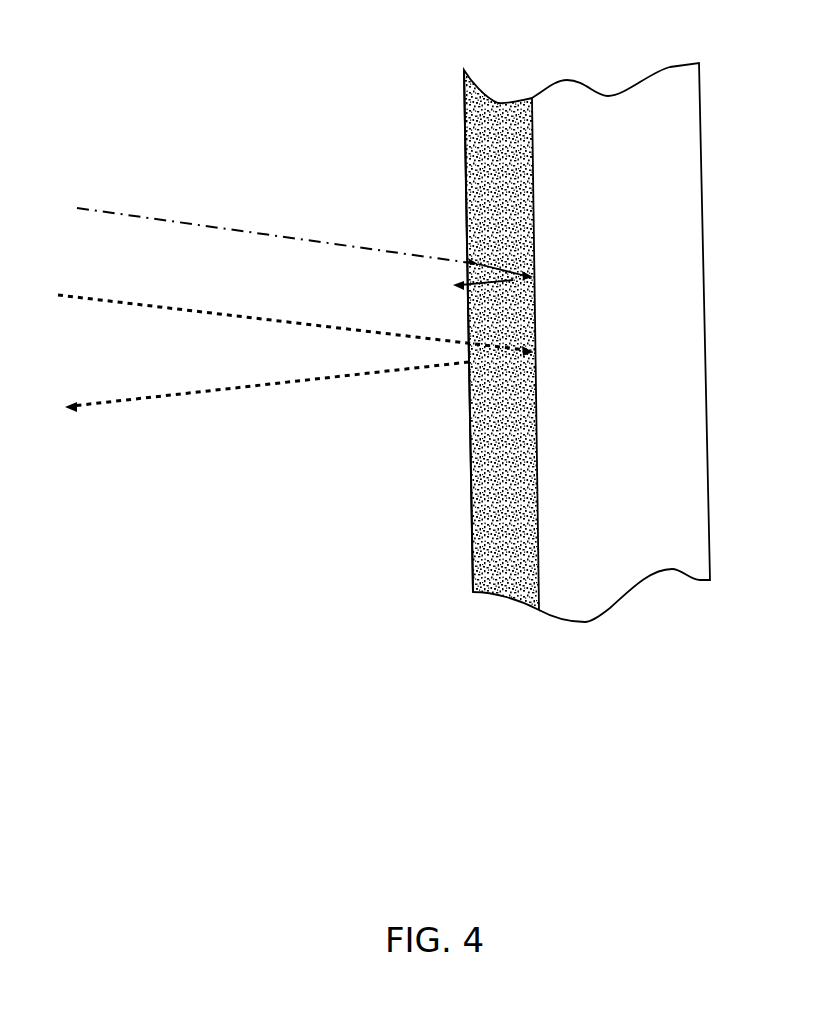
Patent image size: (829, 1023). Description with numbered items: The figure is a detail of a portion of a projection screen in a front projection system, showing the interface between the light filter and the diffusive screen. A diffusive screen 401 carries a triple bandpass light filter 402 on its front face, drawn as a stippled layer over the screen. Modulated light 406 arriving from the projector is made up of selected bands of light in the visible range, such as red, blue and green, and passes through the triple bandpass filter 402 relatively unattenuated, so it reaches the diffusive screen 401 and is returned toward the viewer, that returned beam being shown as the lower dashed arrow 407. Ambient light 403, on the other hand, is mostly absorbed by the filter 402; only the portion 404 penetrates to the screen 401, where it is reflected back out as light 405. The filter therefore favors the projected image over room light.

The diffusive screen 401 is at (608, 97).
The triple bandpass light filter 402 is at (498, 103).
The ambient light 403 is at (250, 232).
The portion of ambient light 404 is at (508, 263).
The reflected light 405 is at (500, 284).
The modulated light 406 is at (283, 323).
The reflected modulated light 407 is at (167, 395).